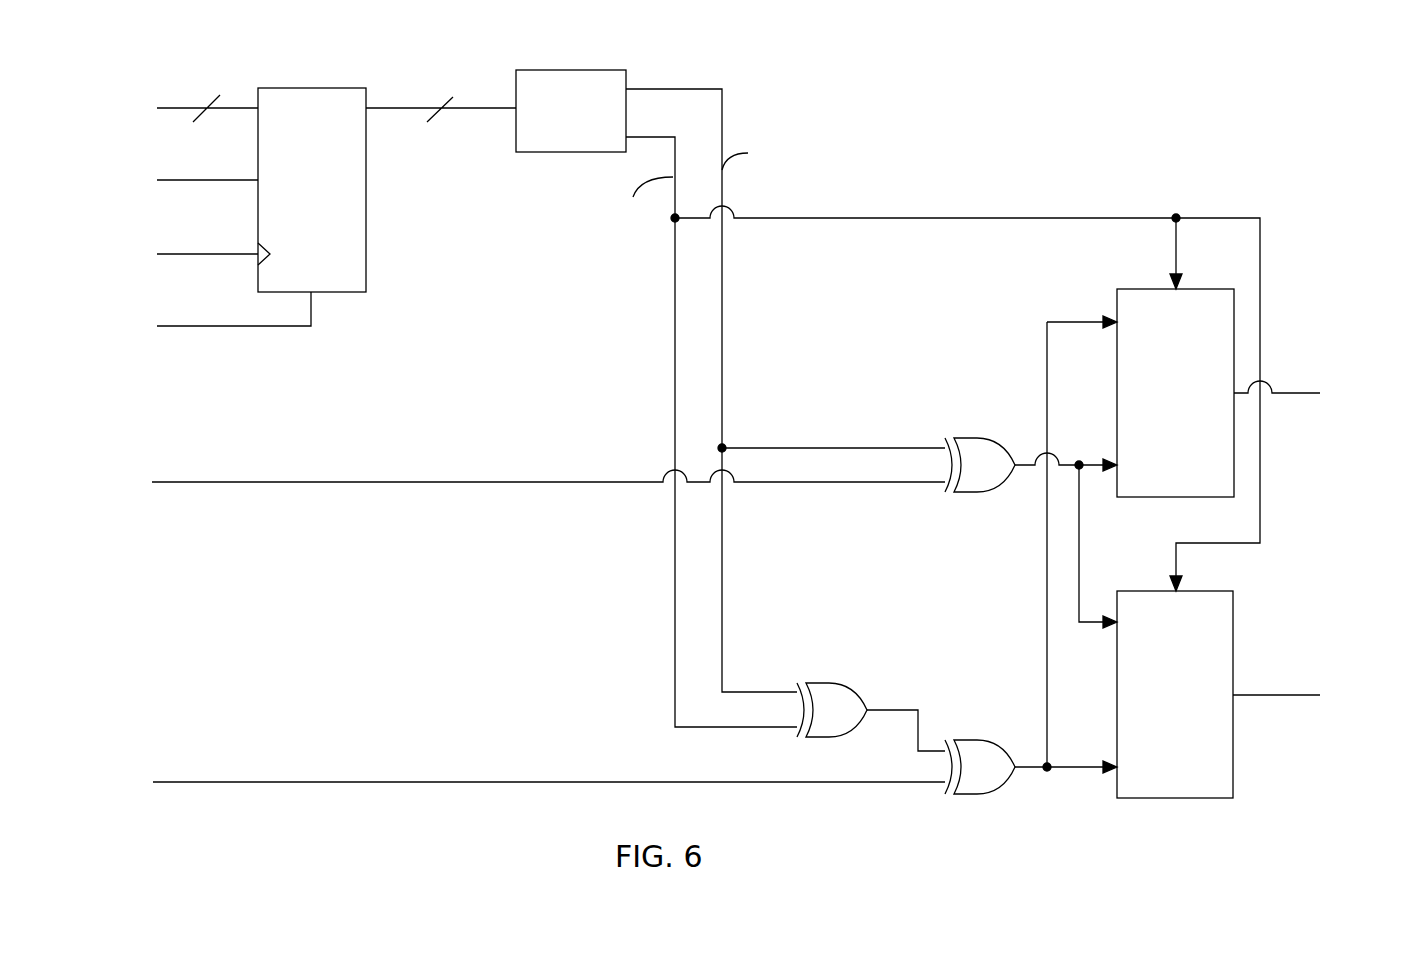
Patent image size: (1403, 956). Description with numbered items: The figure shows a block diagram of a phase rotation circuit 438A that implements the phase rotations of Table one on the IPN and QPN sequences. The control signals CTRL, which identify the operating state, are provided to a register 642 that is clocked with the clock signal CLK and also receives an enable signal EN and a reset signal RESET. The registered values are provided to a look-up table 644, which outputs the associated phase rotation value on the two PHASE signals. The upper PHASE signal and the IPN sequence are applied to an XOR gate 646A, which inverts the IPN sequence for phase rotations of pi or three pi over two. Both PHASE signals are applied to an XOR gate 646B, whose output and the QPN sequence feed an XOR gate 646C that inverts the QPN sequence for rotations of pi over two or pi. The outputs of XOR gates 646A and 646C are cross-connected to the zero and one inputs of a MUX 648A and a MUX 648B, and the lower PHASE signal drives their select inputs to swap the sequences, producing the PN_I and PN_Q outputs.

The phase rotation circuit 438A is at (1264, 143).
The register 642 is at (305, 88).
The look-up table 644 is at (568, 70).
The XOR gate 646A is at (973, 438).
The XOR gate 646B is at (820, 683).
The XOR gate 646C is at (972, 794).
The multiplexer 648A is at (1150, 289).
The multiplexer 648B is at (1160, 798).